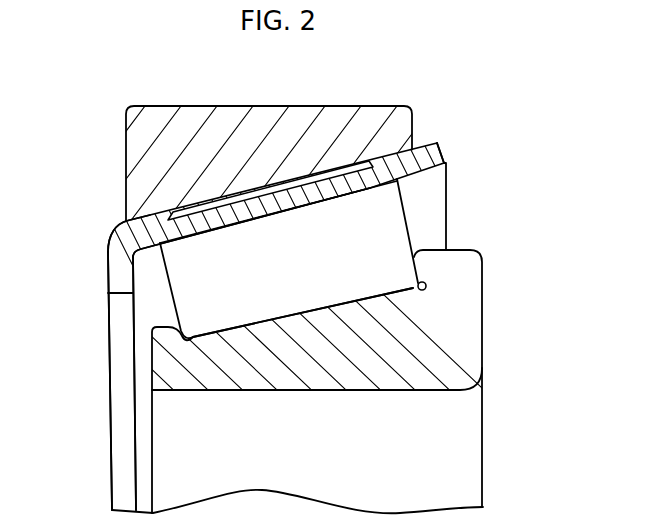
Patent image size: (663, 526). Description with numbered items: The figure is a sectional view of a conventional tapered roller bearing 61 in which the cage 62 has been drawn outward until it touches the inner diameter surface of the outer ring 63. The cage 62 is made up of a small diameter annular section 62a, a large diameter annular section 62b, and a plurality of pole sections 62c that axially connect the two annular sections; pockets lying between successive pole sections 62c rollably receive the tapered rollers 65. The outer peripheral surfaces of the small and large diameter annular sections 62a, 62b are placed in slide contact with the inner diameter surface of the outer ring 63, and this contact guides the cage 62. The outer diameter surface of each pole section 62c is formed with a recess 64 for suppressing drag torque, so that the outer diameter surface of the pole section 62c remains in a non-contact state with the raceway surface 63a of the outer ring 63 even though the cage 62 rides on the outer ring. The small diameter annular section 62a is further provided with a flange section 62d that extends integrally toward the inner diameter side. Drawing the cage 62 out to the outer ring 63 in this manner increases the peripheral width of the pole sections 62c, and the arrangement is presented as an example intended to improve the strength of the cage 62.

The tapered roller bearing 61 is at (480, 98).
The cage 62 is at (443, 148).
The small diameter annular section 62a is at (143, 228).
The large diameter annular section 62b is at (423, 156).
The pole section 62c is at (217, 220).
The flange section 62d is at (110, 281).
The outer ring 63 is at (261, 117).
The raceway surface 63a is at (243, 203).
The recess 64 is at (321, 199).
The tapered roller 65 is at (372, 283).